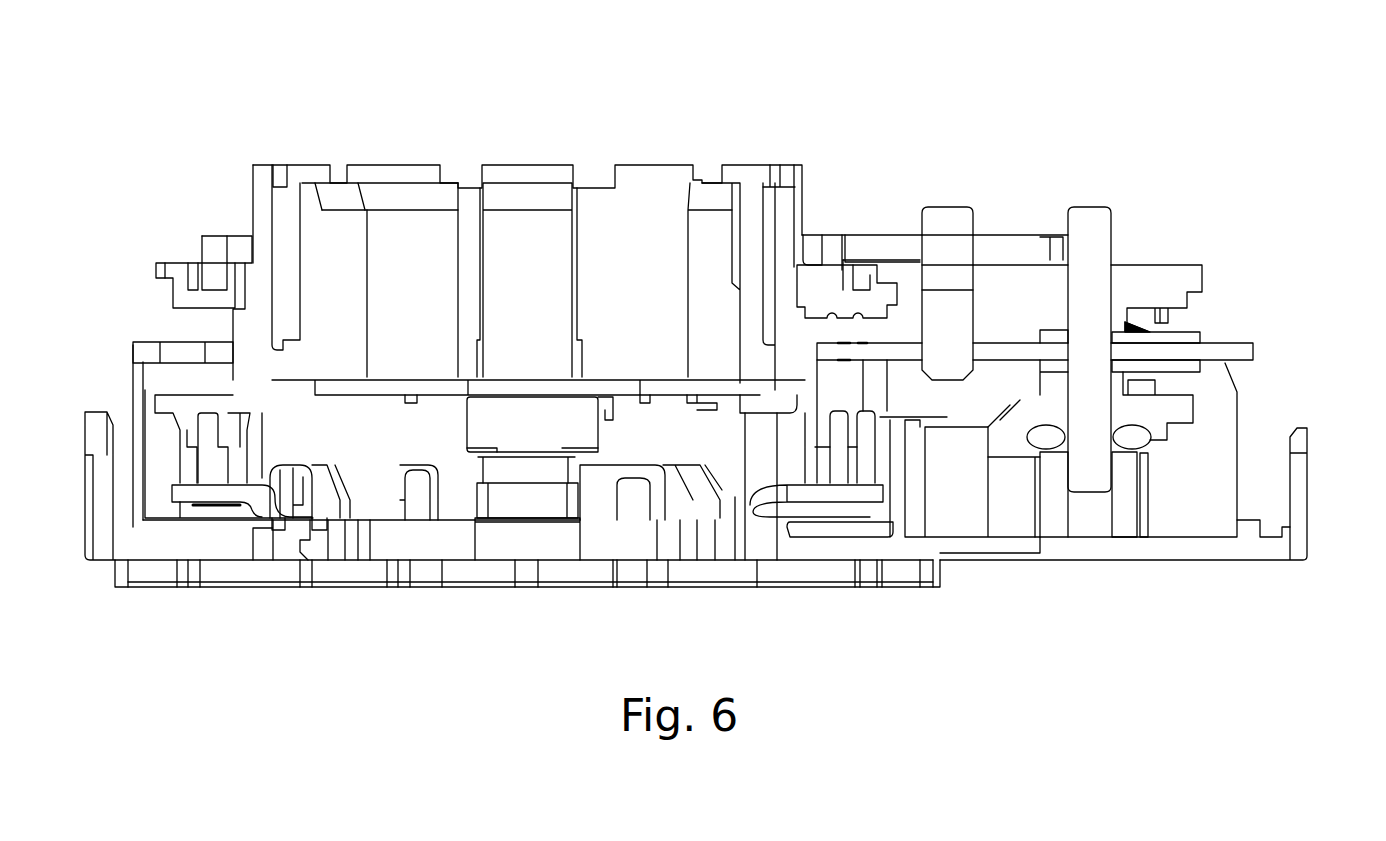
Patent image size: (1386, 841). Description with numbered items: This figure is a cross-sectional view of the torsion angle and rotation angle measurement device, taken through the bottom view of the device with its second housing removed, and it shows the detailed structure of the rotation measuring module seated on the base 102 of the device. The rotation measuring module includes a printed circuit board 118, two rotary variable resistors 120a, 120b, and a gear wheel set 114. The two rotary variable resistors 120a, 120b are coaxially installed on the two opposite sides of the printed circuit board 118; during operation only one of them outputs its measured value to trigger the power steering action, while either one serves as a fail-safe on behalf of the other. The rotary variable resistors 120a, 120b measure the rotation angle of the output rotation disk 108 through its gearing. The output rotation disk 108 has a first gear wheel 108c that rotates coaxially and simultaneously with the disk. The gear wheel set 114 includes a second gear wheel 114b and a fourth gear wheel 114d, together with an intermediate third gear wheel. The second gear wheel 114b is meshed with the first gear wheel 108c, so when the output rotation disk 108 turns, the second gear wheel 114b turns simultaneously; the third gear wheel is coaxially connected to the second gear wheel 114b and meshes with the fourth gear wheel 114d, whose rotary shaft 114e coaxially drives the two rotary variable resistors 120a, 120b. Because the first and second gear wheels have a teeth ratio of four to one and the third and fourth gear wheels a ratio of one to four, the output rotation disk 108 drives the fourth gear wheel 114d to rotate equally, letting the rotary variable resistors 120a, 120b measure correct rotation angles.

The base 102 is at (1130, 542).
The output rotation disk 108 is at (263, 201).
The first gear wheel 108c is at (830, 245).
The gear wheel set 114 is at (1187, 85).
The second gear wheel 114b is at (945, 220).
The fourth gear wheel 114d is at (1158, 283).
The rotary shaft 114e is at (1088, 217).
The printed circuit board 118 is at (1248, 350).
The rotary variable resistor 120a is at (1187, 335).
The rotary variable resistor 120b is at (1233, 363).